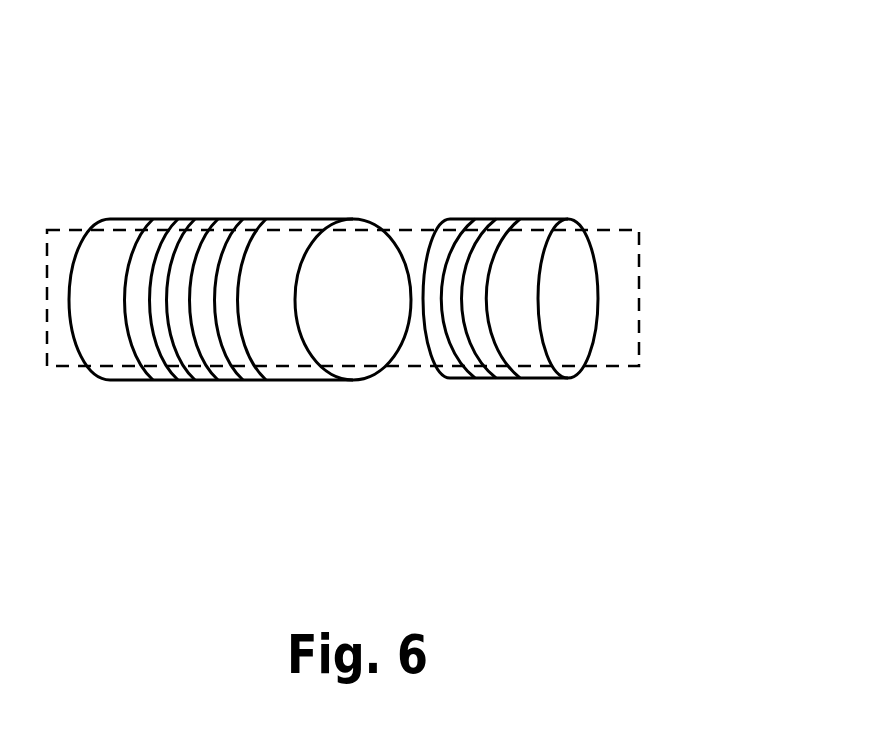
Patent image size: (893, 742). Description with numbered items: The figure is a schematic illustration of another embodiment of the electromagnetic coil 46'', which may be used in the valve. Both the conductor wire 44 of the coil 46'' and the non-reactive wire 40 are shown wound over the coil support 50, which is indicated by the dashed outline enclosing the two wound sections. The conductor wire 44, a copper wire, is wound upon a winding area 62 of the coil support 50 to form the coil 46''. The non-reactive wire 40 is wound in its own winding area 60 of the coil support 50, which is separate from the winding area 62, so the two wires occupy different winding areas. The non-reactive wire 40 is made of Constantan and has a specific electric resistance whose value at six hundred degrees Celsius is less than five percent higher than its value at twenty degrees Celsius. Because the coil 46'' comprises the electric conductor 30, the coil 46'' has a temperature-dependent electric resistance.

The electric conductor 30 is at (416, 197).
The electromagnetic coil 46'' is at (293, 284).
The winding area 62 is at (275, 332).
The conductor wire 44 is at (240, 306).
The non-reactive wire 40 is at (493, 328).
The winding area 60 is at (508, 272).
The coil support 50 is at (400, 304).